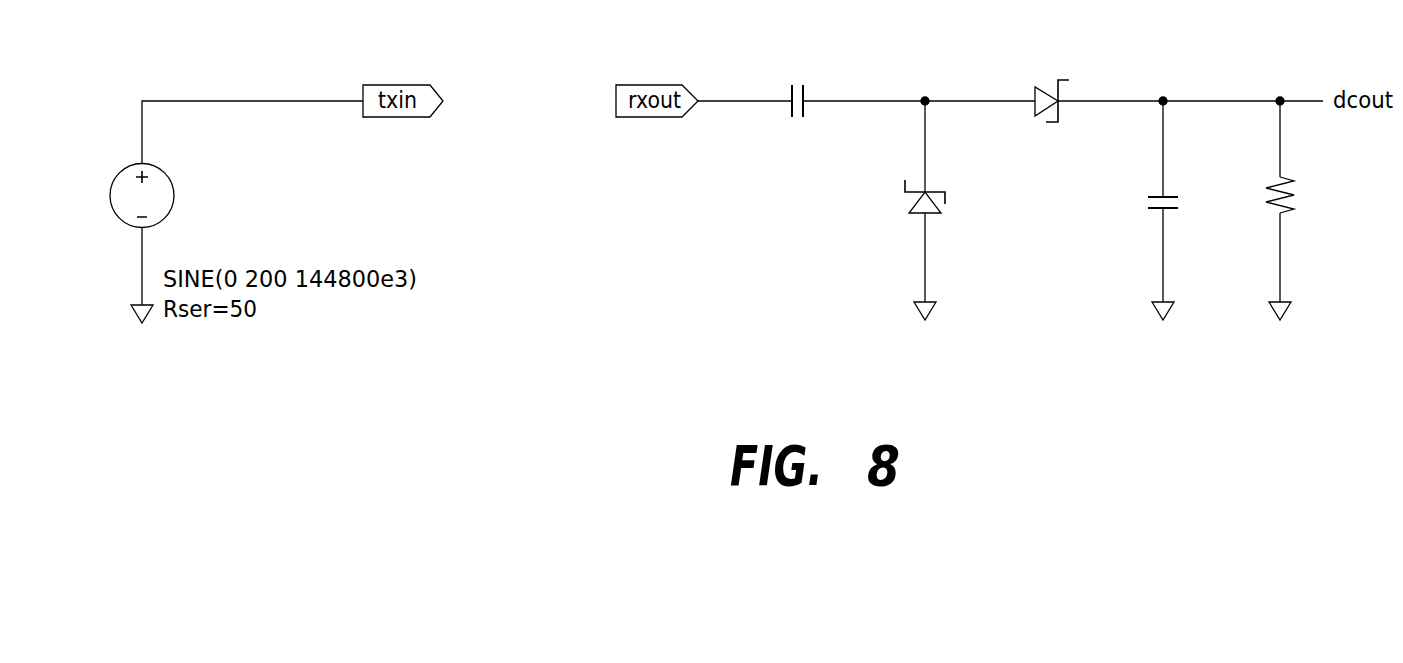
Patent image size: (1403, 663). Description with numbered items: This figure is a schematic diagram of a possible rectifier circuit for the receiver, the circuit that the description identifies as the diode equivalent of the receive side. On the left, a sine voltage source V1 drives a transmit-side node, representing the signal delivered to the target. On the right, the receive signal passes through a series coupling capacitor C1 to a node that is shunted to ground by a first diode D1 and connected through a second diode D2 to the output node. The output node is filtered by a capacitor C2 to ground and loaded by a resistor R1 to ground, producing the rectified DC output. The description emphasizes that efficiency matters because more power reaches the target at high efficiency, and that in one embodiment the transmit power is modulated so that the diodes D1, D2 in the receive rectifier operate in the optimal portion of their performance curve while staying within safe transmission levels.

The sine voltage source V1 is at (162, 235).
The coupling capacitor .1u C1 is at (793, 104).
The Schottky diode BAT54 D1 is at (965, 201).
The Schottky diode BAT54 D2 is at (1045, 104).
The filter capacitor .1u C2 is at (1185, 201).
The load resistor 100 R1 is at (1304, 201).